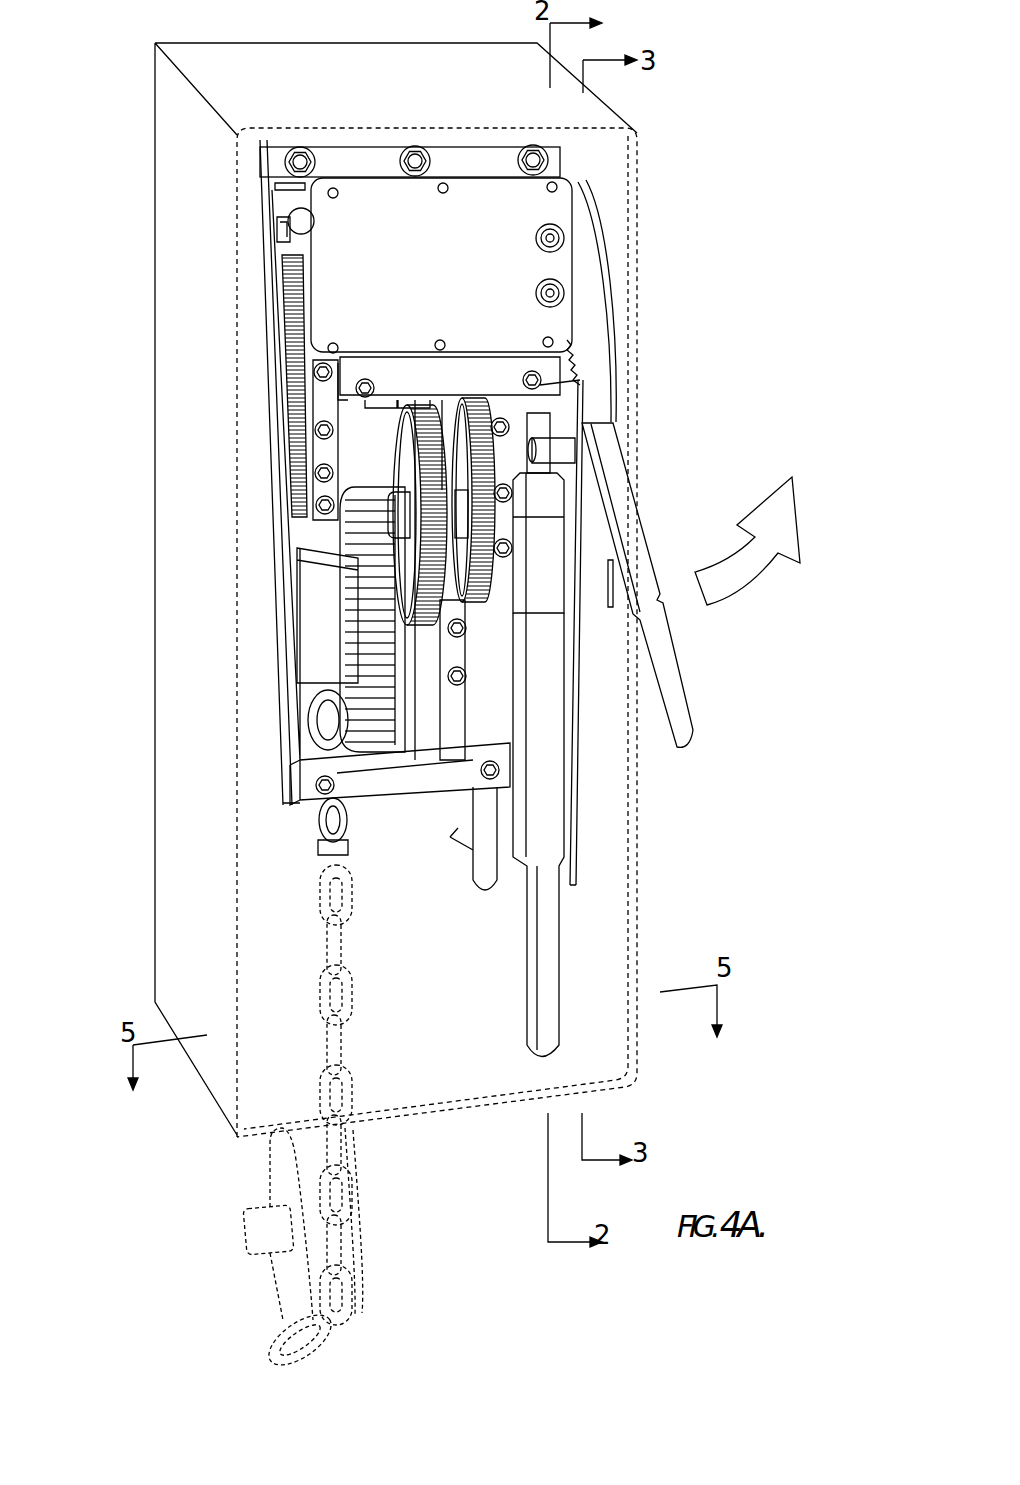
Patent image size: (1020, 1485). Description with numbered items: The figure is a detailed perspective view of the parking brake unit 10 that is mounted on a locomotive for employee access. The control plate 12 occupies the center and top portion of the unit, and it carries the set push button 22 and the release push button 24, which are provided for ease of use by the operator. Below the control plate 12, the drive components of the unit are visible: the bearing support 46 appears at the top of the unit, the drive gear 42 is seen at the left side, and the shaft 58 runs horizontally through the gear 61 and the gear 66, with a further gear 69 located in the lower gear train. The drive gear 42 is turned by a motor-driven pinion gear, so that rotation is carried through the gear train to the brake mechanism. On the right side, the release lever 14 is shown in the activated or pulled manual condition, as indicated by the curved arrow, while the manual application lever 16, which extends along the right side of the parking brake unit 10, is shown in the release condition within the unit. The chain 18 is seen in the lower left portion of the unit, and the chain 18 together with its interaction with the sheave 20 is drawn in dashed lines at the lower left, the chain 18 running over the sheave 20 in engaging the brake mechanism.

The parking brake unit 10 is at (712, 104).
The control plate 12 is at (480, 193).
The release lever 14 is at (618, 505).
The manual application lever 16 is at (545, 850).
The chain 18 is at (315, 825).
The sheave 20 is at (293, 1190).
The set push button 22 is at (562, 234).
The release push button 24 is at (562, 288).
The drive gear 42 is at (297, 347).
The bearing support 46 is at (350, 163).
The shaft 58 is at (403, 515).
The gear 61 is at (433, 433).
The gear 66 is at (480, 575).
The gear 69 is at (427, 575).